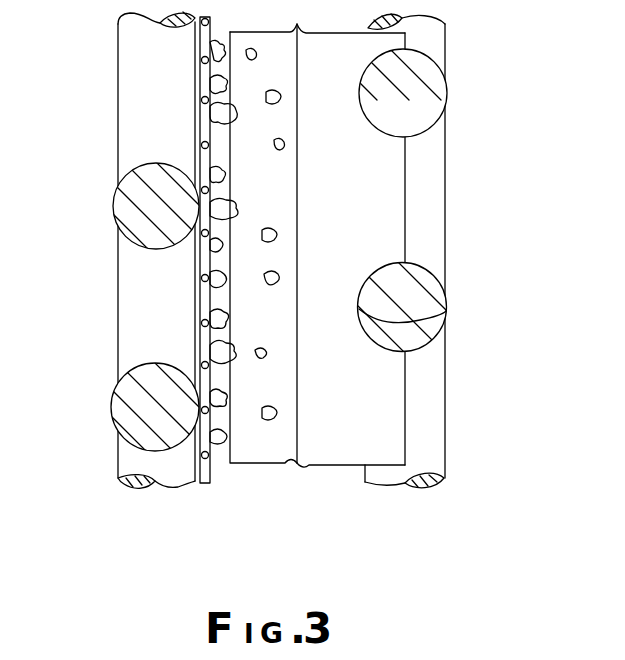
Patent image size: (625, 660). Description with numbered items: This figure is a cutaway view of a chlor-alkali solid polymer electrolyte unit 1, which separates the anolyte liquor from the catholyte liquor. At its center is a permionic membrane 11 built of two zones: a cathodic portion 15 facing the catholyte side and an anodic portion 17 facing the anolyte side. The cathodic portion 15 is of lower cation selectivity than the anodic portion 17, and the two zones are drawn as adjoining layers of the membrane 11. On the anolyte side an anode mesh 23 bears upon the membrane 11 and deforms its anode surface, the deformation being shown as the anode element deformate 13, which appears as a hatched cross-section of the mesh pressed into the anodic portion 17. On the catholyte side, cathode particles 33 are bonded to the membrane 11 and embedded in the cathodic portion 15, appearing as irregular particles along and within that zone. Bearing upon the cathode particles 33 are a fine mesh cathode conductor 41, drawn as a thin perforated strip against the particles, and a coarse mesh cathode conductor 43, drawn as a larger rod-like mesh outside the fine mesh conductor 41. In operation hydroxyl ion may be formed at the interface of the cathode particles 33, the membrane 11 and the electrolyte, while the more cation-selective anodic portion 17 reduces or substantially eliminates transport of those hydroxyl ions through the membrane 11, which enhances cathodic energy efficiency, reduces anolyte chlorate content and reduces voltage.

The solid polymer electrolyte unit 1 is at (435, 558).
The permionic membrane 11 is at (405, 516).
The anode element deformate 13 is at (447, 316).
The cathodic portion 15 is at (268, 458).
The anodic portion 17 is at (332, 458).
The anode mesh 23 is at (430, 113).
The cathode particles 33 is at (228, 86).
The fine mesh cathode conductor 41 is at (203, 483).
The coarse mesh cathode conductor 43 is at (125, 340).